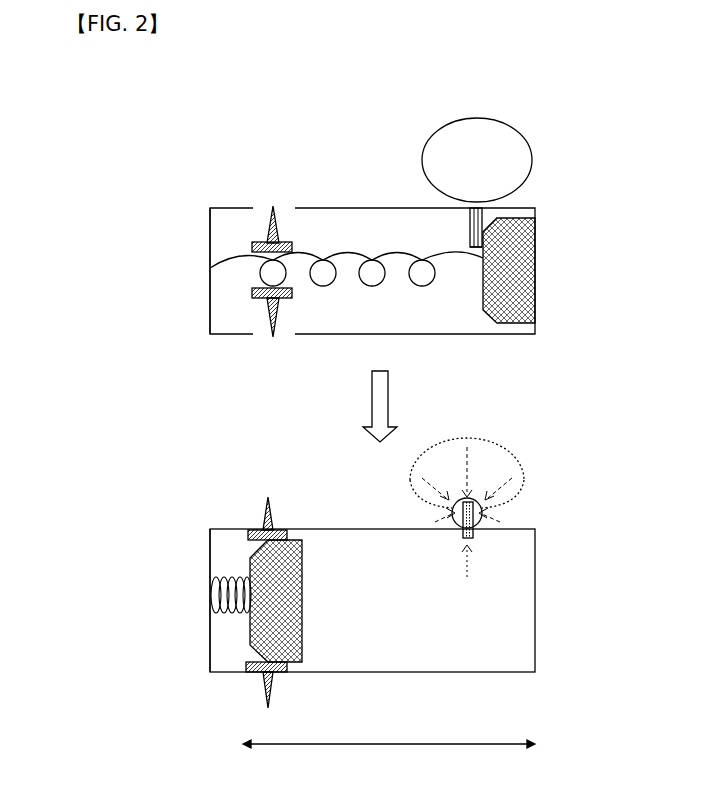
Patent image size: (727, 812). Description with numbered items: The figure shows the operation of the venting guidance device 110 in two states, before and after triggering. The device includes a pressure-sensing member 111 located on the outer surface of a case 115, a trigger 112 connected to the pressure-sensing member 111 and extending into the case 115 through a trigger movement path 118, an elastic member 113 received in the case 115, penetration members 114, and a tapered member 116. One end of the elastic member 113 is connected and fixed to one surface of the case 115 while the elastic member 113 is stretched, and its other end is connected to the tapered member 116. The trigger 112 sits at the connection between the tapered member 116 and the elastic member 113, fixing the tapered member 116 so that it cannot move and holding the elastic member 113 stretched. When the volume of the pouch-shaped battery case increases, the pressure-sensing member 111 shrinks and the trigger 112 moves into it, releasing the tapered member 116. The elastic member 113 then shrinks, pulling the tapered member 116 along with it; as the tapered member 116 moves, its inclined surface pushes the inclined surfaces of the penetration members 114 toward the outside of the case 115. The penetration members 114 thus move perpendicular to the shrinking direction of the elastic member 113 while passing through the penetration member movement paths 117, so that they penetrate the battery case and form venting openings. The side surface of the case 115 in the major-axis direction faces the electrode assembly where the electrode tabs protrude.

The venting guidance device 110 is at (127, 142).
The pressure-sensing member 111 is at (532, 152).
The trigger 112 is at (468, 240).
The elastic member 113 is at (365, 283).
The penetration members 114 is at (262, 243).
The case 115 is at (208, 248).
The tapered member 116 is at (535, 280).
The penetration member movement paths 117 is at (288, 198).
The trigger movement path 118 is at (487, 236).